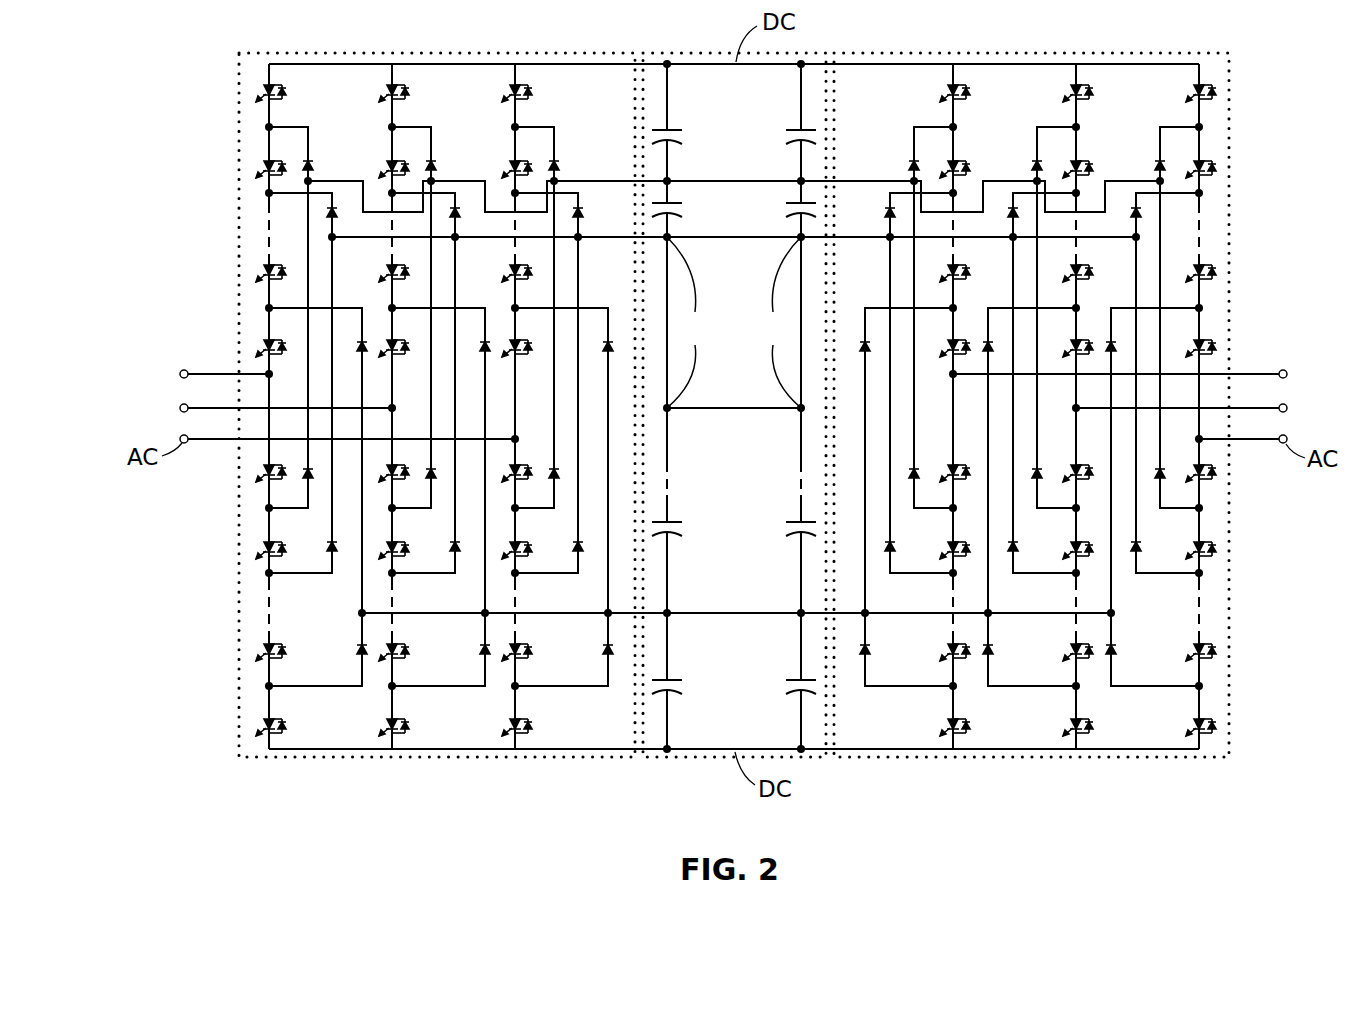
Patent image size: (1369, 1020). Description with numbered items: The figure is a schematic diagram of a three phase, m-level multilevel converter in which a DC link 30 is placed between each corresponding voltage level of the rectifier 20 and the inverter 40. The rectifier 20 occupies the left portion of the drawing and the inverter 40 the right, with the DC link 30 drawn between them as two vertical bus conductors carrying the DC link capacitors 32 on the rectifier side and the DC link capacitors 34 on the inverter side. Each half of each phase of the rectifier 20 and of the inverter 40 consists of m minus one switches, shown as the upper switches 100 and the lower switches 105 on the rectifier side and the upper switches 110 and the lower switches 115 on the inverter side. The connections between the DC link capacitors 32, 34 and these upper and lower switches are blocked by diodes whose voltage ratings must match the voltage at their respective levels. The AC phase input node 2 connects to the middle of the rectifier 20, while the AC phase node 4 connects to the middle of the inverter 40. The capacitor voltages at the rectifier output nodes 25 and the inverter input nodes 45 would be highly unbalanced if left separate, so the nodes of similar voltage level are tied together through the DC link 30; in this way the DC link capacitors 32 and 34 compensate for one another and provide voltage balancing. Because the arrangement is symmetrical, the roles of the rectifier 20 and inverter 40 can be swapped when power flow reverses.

The AC phase input node 2 is at (180, 437).
The AC phase node 4 is at (1287, 437).
The rectifier 20 is at (463, 62).
The rectifier output nodes 25 is at (666, 62).
The DC link 30 is at (722, 61).
The DC link capacitors 32 is at (702, 128).
The DC link capacitors 34 is at (784, 134).
The inverter 40 is at (1012, 62).
The inverter input nodes 45 is at (805, 62).
The upper m−1 switches 100 is at (253, 338).
The lower m−1 switches 105 is at (253, 720).
The upper m−1 switches 110 is at (1222, 338).
The lower m−1 switches 115 is at (1222, 720).